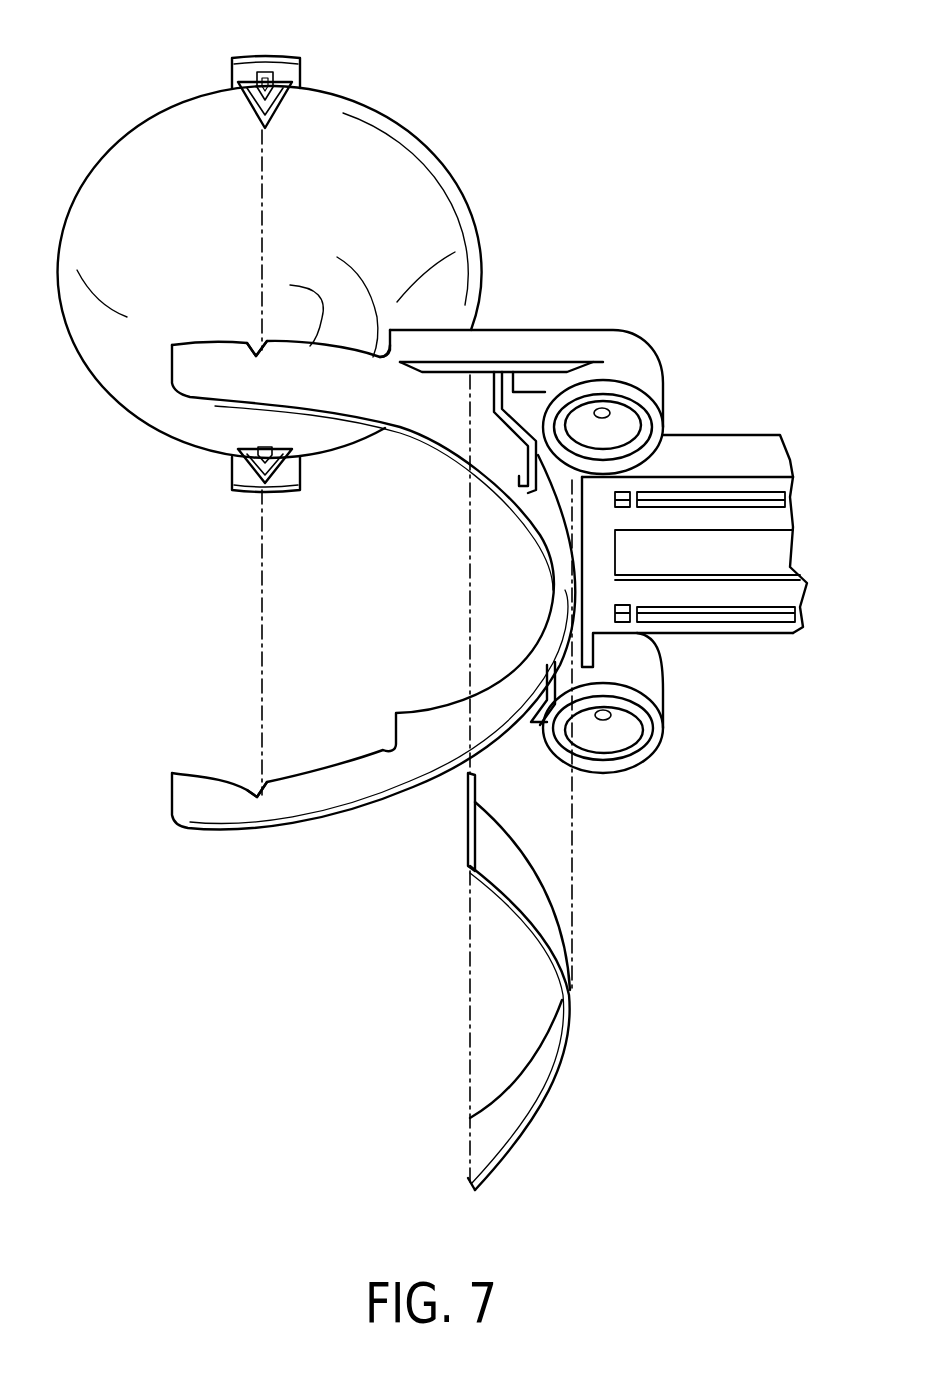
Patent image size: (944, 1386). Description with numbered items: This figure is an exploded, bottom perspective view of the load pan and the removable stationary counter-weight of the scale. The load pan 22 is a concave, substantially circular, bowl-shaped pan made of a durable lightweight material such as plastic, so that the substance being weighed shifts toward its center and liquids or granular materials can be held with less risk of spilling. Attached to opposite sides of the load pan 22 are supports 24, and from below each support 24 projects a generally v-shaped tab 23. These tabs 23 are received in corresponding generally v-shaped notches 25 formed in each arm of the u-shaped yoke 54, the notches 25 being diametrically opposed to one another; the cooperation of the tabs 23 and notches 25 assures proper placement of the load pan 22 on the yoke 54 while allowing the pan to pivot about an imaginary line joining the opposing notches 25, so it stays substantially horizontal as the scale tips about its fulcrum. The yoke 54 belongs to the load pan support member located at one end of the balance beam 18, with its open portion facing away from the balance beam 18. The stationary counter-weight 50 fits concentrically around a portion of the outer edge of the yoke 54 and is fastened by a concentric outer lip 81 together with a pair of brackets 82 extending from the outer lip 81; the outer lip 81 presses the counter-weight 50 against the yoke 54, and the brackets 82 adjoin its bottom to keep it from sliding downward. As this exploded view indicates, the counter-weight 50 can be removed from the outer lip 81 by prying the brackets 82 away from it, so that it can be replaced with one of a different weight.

The balance beam 18 is at (707, 597).
The load pan 22 is at (355, 206).
The v-shaped tab 23 is at (232, 88).
The support 24 is at (240, 55).
The v-shaped notch 25 is at (254, 350).
The stationary counter-weight 50 is at (543, 897).
The u-shaped yoke 54 is at (430, 417).
The outer lip 81 is at (527, 420).
The bracket 82 is at (543, 457).